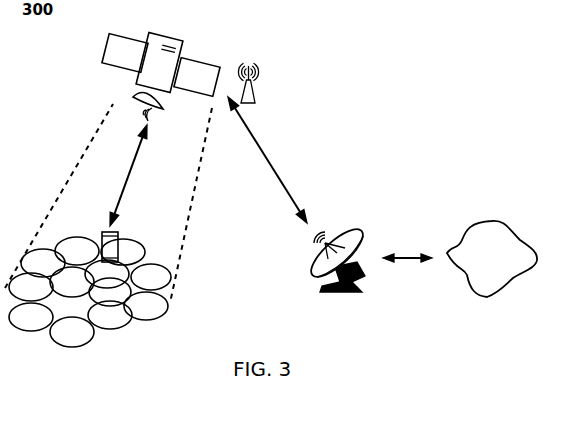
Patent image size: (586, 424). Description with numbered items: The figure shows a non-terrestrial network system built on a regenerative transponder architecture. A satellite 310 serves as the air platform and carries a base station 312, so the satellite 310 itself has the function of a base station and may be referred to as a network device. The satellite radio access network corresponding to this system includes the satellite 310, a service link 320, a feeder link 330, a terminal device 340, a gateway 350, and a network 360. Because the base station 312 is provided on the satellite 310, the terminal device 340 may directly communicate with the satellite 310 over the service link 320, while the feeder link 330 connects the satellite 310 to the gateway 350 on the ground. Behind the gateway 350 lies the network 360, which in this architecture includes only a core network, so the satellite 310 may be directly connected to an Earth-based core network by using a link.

The satellite 310 is at (200, 58).
The base station 312 is at (262, 70).
The service link 320 is at (119, 175).
The feeder link 330 is at (267, 160).
The terminal device 340 is at (117, 231).
The gateway 350 is at (346, 229).
The network 360 is at (492, 259).